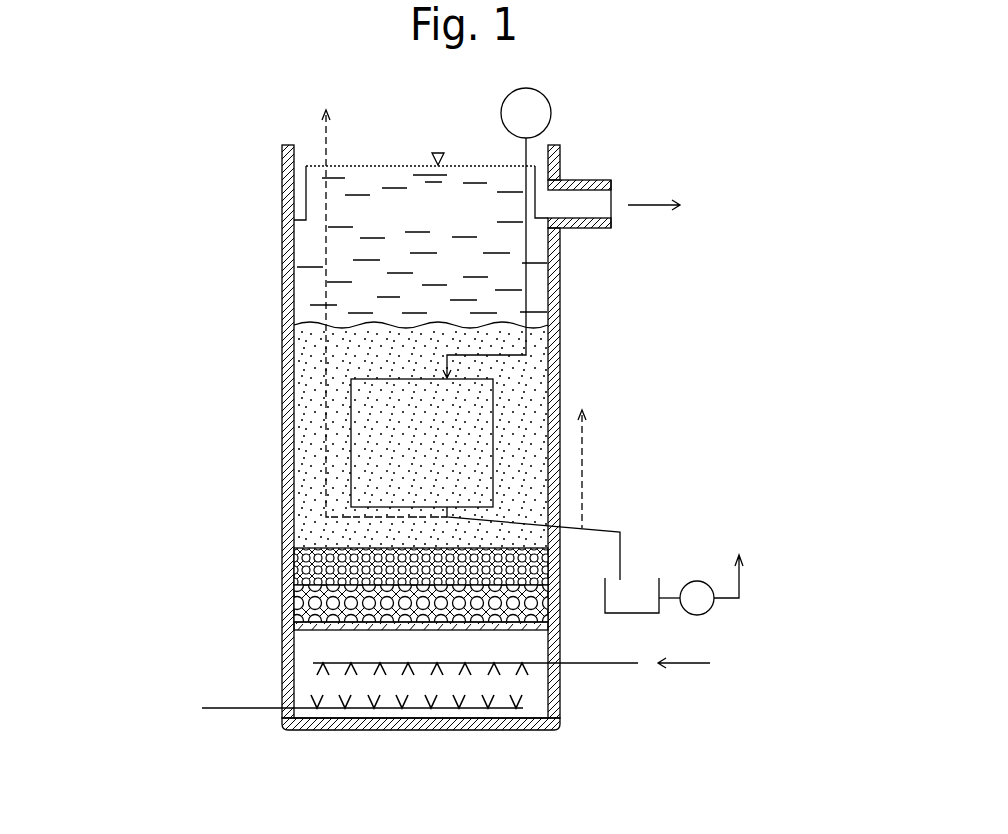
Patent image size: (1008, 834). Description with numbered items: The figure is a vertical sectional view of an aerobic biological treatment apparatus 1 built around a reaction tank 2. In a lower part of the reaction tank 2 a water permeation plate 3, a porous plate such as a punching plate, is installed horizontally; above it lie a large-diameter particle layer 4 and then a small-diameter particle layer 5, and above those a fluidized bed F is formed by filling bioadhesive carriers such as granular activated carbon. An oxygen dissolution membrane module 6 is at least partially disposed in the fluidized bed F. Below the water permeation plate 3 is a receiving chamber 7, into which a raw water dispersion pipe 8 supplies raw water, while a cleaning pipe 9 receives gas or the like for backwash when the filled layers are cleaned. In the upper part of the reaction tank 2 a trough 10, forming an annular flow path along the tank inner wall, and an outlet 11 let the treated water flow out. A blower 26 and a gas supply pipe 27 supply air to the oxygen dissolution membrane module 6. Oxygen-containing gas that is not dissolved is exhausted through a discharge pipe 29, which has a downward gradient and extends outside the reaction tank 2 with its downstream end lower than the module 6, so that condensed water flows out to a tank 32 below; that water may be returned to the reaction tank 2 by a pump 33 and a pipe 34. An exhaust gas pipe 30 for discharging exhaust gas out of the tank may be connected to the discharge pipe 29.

The aerobic biological treatment apparatus 1 is at (188, 161).
The reaction tank 2 is at (562, 348).
The water permeation plate 3 is at (320, 645).
The large-diameter particle layer 4 is at (294, 601).
The small-diameter particle layer 5 is at (294, 560).
The oxygen dissolution membrane module 6 is at (493, 400).
The receiving chamber 7 is at (300, 666).
The raw water dispersion pipe 8 is at (606, 665).
The cleaning pipe 9 is at (248, 712).
The trough 10 is at (288, 195).
The outlet 11 is at (591, 180).
The blower 26 is at (500, 108).
The gas supply pipe 27 is at (526, 203).
The discharge pipe 29 is at (603, 531).
The exhaust gas pipe 30 is at (326, 141).
The tank 32 is at (603, 605).
The pump 33 is at (697, 580).
The pipe 34 is at (741, 573).
The fluidized bed F is at (294, 433).